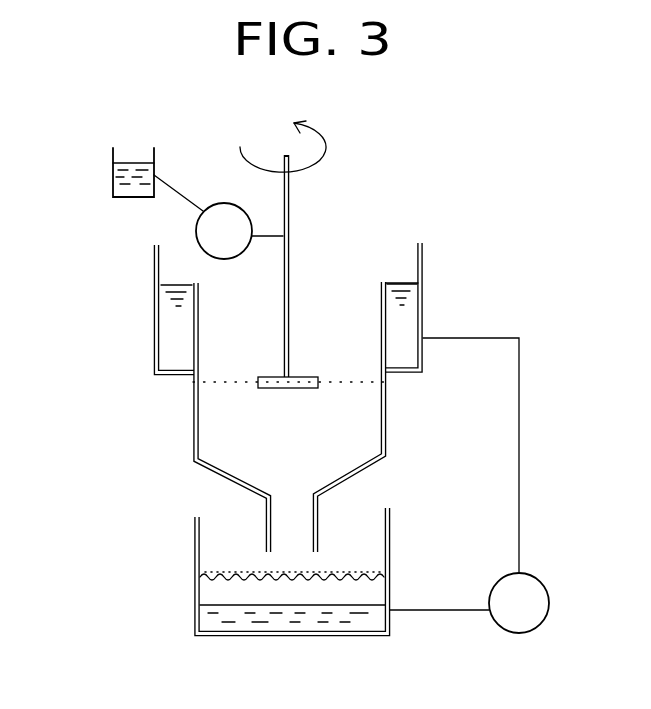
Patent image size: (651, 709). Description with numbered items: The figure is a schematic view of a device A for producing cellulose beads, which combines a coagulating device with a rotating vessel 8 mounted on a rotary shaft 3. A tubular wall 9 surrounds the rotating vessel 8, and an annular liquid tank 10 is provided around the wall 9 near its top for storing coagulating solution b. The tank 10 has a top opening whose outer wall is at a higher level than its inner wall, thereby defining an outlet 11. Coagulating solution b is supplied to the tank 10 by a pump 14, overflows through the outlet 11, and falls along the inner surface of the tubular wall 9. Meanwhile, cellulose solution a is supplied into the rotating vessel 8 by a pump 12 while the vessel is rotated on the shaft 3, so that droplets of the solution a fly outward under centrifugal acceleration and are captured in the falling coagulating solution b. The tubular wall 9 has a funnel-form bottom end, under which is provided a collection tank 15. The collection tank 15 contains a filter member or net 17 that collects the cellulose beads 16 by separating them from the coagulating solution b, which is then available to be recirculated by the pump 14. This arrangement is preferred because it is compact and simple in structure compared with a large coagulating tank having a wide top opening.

The rotary shaft 3 is at (290, 207).
The rotating vessel 8 is at (277, 388).
The tubular wall 9 is at (386, 423).
The annular liquid tank 10 is at (423, 253).
The outlet 11 is at (388, 283).
The pump 12 is at (196, 230).
The pump 14 is at (552, 603).
The collection tank 15 is at (193, 532).
The cellulose beads 16 is at (283, 572).
The filter member or net 17 is at (378, 580).
The cellulose solution a is at (110, 177).
The coagulating solution b is at (172, 320).
The device A is at (420, 213).